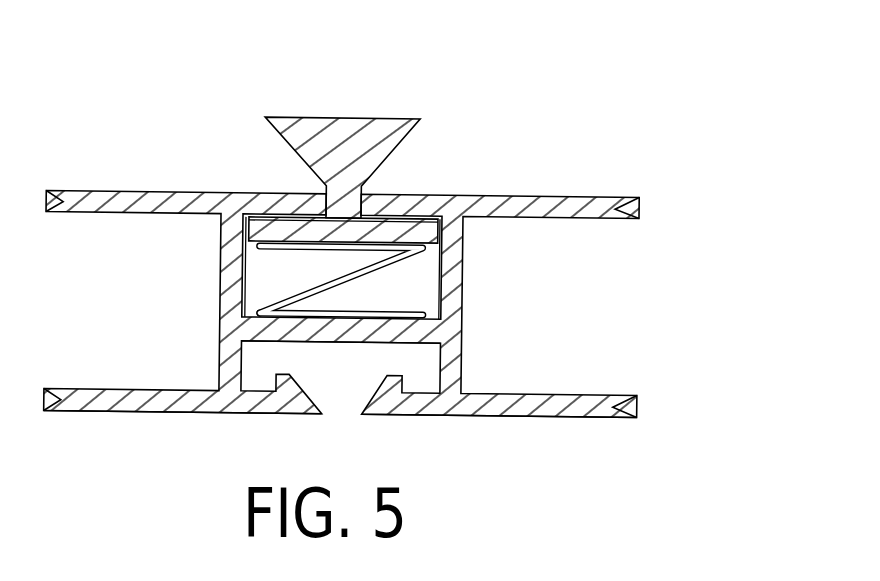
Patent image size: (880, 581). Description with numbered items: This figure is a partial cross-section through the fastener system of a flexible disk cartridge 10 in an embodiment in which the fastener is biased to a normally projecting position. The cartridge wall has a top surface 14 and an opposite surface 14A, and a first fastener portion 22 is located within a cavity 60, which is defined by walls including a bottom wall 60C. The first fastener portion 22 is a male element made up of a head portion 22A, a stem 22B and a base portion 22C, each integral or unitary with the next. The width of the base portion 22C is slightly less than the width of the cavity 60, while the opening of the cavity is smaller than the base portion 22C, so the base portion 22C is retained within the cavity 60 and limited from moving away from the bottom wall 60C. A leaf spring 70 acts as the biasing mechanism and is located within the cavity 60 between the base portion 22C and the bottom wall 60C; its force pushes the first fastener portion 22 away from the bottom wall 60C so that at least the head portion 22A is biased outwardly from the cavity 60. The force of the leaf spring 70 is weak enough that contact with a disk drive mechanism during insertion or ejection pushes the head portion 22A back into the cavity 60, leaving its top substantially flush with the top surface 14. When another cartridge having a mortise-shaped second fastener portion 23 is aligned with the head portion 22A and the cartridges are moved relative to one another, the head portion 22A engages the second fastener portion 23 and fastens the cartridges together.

The flexible disk cartridge 10 is at (403, 232).
The top surface 14 is at (566, 197).
The surface 14A is at (551, 418).
The first fastener portion 22 is at (378, 78).
The head portion 22A is at (263, 120).
The stem 22B is at (383, 196).
The base portion 22C is at (430, 220).
The second fastener portion 23 is at (357, 384).
The cavity 60 is at (426, 269).
The bottom wall 60C is at (437, 307).
The leaf spring 70 is at (293, 297).